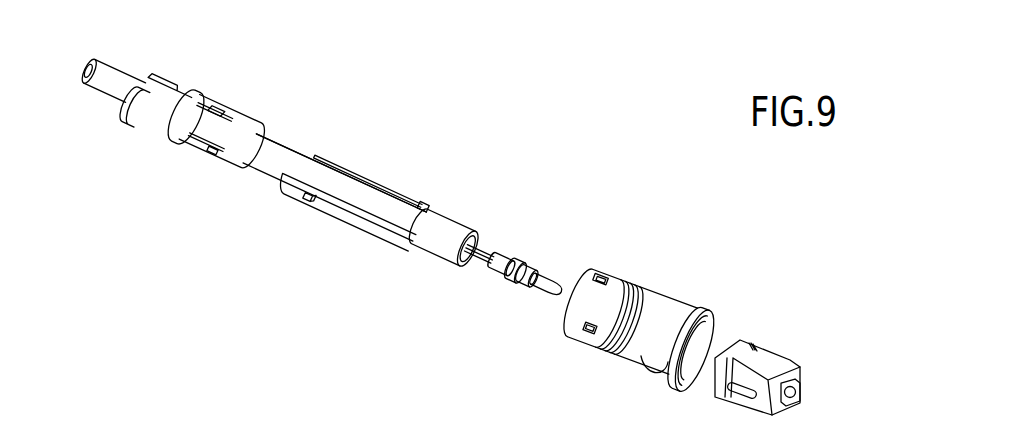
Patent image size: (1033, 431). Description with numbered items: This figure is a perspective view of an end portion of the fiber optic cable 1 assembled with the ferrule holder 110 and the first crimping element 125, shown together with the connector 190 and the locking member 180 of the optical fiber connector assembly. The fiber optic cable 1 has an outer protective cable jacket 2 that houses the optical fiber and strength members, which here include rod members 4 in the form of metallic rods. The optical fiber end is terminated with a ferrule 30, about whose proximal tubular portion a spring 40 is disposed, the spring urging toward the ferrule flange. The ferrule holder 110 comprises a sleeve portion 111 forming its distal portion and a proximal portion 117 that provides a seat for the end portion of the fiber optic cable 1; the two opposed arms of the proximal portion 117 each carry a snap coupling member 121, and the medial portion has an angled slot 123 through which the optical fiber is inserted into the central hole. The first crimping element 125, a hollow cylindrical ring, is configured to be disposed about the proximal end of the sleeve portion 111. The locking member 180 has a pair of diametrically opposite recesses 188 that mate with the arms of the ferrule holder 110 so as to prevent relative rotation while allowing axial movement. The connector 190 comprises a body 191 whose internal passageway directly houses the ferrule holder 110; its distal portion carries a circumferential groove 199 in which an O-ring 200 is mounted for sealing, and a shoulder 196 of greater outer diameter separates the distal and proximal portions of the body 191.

The fiber optic cable 1 is at (251, 215).
The outer protective cable jacket 2 is at (128, 56).
The rod members 4 is at (450, 264).
The ferrule 30 is at (545, 261).
The spring 40 is at (500, 258).
The ferrule holder 110 is at (402, 143).
The sleeve portion 111 is at (483, 282).
The proximal portion 117 is at (334, 225).
The snap coupling member 121 is at (300, 196).
The slot 123 is at (423, 210).
The first crimping element 125 is at (437, 237).
The locking member 180 is at (231, 92).
The recesses 188 is at (203, 137).
The connector 190 is at (745, 315).
The body 191 is at (698, 281).
The shoulder 196 is at (653, 367).
The circumferential groove 199 is at (757, 337).
The O-ring 200 is at (718, 310).